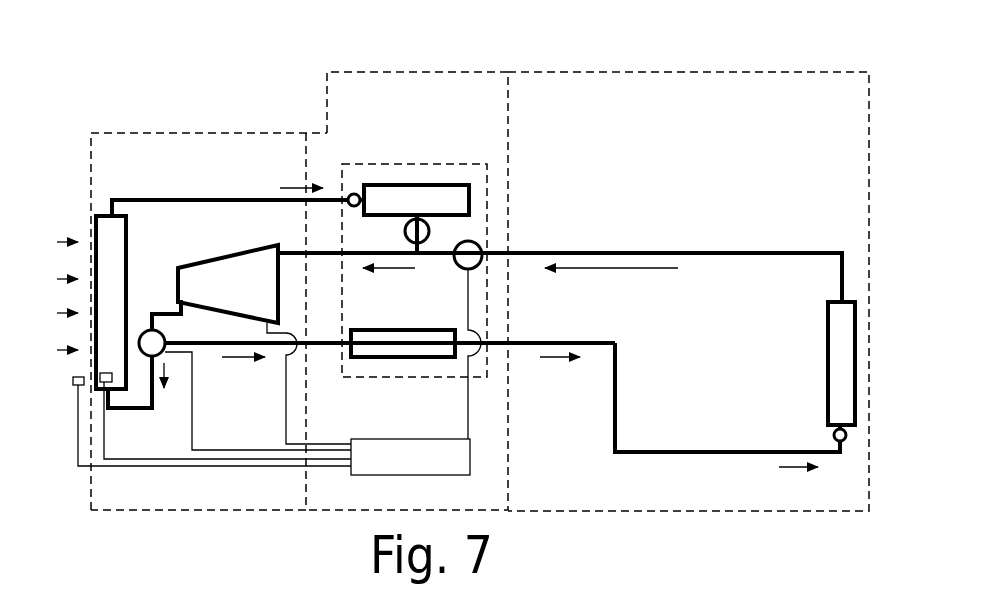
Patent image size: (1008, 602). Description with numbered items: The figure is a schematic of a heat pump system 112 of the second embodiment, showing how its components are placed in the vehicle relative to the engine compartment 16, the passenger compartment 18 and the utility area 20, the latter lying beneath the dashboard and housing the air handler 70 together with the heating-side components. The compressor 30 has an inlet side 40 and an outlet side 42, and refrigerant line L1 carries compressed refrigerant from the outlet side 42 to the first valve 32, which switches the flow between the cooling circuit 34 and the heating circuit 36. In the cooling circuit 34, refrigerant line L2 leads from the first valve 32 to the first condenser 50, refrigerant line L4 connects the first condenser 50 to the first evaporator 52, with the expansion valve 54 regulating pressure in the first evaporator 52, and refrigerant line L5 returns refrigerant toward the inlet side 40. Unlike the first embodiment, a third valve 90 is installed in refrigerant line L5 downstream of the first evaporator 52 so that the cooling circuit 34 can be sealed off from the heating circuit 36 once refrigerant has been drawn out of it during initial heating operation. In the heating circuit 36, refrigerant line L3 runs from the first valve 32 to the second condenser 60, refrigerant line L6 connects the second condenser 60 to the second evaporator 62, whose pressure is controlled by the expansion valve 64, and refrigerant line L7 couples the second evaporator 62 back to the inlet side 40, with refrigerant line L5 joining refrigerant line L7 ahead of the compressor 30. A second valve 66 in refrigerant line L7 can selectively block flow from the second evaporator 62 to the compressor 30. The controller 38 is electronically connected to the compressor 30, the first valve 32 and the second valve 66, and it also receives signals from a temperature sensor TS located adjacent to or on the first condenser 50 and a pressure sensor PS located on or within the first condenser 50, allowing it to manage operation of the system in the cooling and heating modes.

The heat pump system 112 is at (286, 52).
The engine compartment 16 is at (215, 133).
The passenger compartment 18 is at (732, 62).
The utility area 20 is at (407, 100).
The air handler 70 is at (387, 164).
The first condenser 50 is at (102, 225).
The cooling circuit 34 is at (182, 186).
The refrigerant line L4 is at (258, 198).
The expansion valve 54 is at (354, 194).
The first evaporator 52 is at (457, 193).
The third valve 90 is at (430, 231).
The refrigerant line L5 is at (410, 217).
The second valve 66 is at (472, 250).
The refrigerant line L7 is at (771, 253).
The heating circuit 36 is at (729, 240).
The compressor 30 is at (227, 265).
The inlet side 40 is at (282, 245).
The outlet side 42 is at (176, 303).
The refrigerant line L1 is at (160, 312).
The first valve 32 is at (152, 340).
The refrigerant line L2 is at (121, 385).
The refrigerant line L3 is at (220, 345).
The refrigerant line L6 is at (678, 448).
The second condenser 60 is at (400, 333).
The second evaporator 62 is at (827, 360).
The expansion valve 64 is at (834, 435).
The controller 38 is at (413, 467).
The pressure sensor PS is at (110, 381).
The temperature sensor TS is at (74, 384).